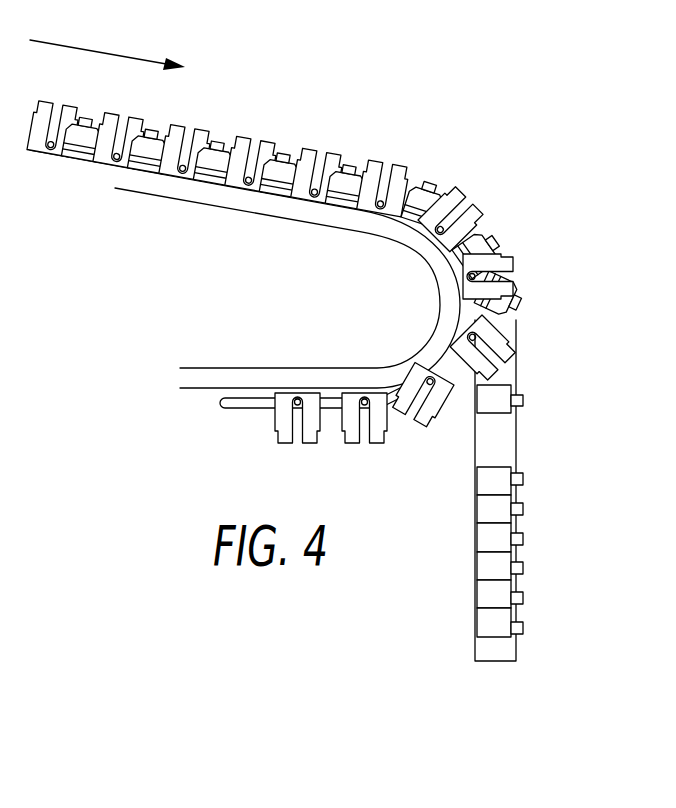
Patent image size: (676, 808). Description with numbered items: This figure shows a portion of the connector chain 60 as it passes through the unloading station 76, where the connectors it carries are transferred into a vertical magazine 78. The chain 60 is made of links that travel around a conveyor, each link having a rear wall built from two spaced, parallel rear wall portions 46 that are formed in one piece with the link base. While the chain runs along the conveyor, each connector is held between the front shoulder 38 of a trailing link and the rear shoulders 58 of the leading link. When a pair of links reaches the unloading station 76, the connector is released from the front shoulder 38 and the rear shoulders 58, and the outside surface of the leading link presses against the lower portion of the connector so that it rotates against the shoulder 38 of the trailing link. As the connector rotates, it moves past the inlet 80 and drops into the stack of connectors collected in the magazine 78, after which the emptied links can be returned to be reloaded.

The front shoulder 38 is at (522, 287).
The rear wall portions 46 is at (512, 353).
The rear shoulder 58 is at (510, 362).
The connector chain 60 is at (224, 115).
The unloading station 76 is at (513, 285).
The vertical magazine 78 is at (528, 490).
The inlet 80 is at (470, 383).